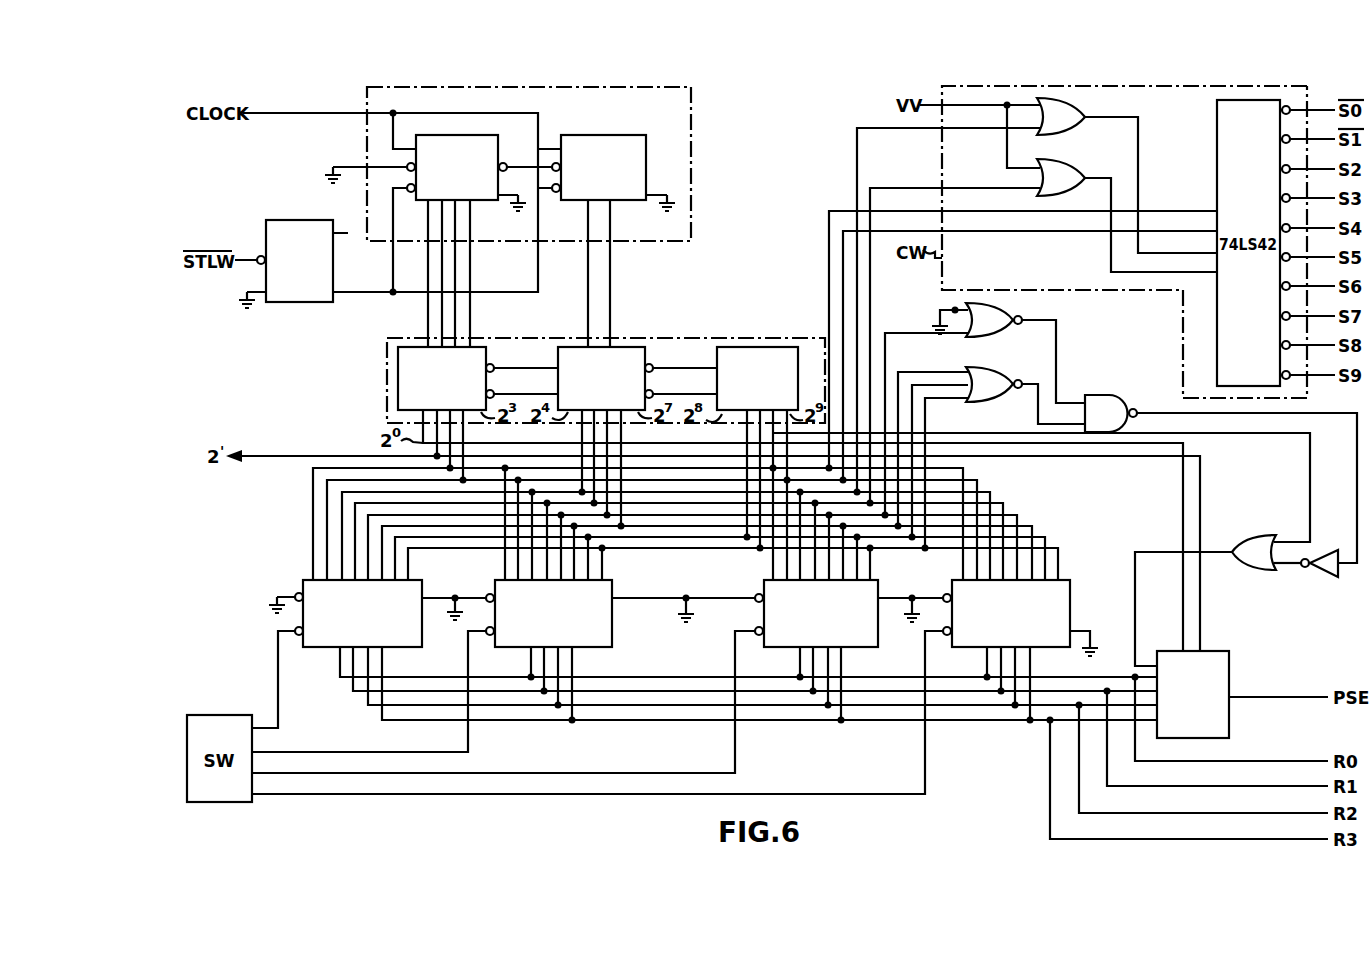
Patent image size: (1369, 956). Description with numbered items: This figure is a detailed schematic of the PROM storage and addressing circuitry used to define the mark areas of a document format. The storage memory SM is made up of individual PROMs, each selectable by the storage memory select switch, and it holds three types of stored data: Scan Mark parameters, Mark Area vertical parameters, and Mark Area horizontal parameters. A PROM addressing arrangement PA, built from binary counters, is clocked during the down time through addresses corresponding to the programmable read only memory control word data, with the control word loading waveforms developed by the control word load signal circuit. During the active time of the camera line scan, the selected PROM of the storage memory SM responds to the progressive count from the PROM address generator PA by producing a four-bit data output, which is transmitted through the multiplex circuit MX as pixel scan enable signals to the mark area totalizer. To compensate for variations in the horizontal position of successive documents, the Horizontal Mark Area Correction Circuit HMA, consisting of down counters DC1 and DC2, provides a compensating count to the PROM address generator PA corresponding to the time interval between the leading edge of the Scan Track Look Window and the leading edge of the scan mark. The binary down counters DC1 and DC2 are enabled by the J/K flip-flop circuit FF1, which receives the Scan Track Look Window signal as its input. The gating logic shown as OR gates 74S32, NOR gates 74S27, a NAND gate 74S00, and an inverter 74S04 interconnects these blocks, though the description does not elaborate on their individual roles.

The horizontal mark area correction circuit HMA is at (691, 110).
The down counter DC1 is at (492, 136).
The down counter DC2 is at (640, 136).
The J/K flip-flop circuit FF1 is at (303, 219).
The PROM addressing arrangement PA is at (781, 336).
The storage memory SM is at (270, 583).
The multiplex circuit MX is at (1222, 651).
The OR gates 74S32 is at (1050, 146).
The NOR gates 74S27 is at (972, 350).
The NAND gate 74S00 is at (1093, 380).
The inverter 74S04 is at (1333, 590).